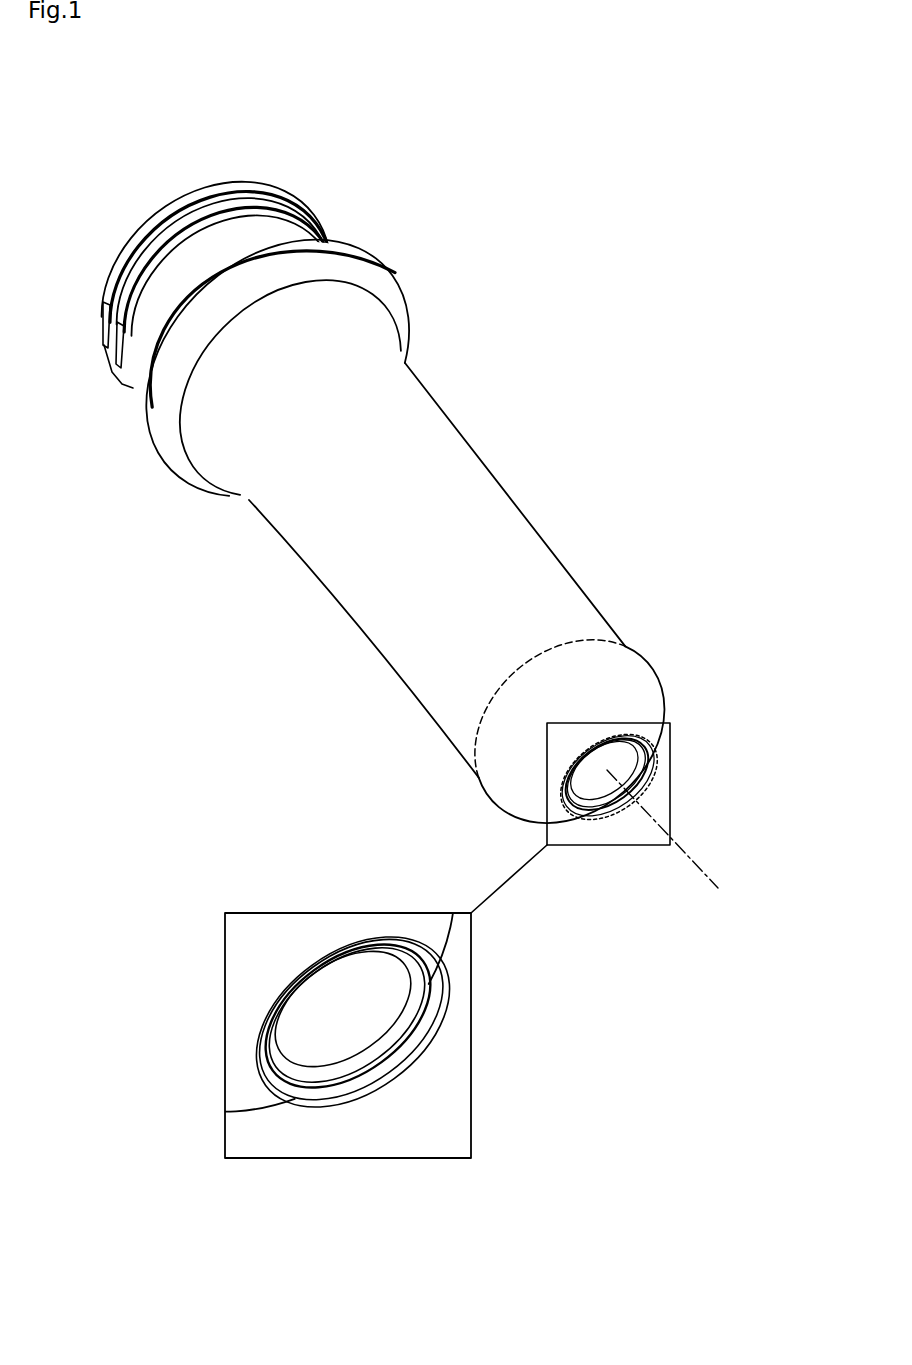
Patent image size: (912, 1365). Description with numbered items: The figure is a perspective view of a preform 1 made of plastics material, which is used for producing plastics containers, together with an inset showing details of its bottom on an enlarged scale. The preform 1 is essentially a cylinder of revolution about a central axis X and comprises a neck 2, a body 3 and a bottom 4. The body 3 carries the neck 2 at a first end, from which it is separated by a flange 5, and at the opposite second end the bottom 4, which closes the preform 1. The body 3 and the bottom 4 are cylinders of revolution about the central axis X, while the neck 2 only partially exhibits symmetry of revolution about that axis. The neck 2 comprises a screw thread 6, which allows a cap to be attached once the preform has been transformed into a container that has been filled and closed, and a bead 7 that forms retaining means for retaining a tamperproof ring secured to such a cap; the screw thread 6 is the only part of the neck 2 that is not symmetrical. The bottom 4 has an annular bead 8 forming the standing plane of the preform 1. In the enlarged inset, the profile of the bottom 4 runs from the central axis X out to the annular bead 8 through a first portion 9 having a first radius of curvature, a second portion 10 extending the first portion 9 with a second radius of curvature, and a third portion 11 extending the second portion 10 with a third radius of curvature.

The preform 1 is at (607, 326).
The neck 2 is at (354, 203).
The body 3 is at (545, 508).
The bottom 4 is at (684, 686).
The flange 5 is at (397, 305).
The screw thread 6 is at (103, 256).
The bead 7 is at (143, 367).
The annular bead 8 is at (303, 1100).
The first portion 9 is at (302, 1011).
The second portion 10 is at (403, 970).
The third portion 11 is at (373, 1055).
The central axis X is at (694, 879).